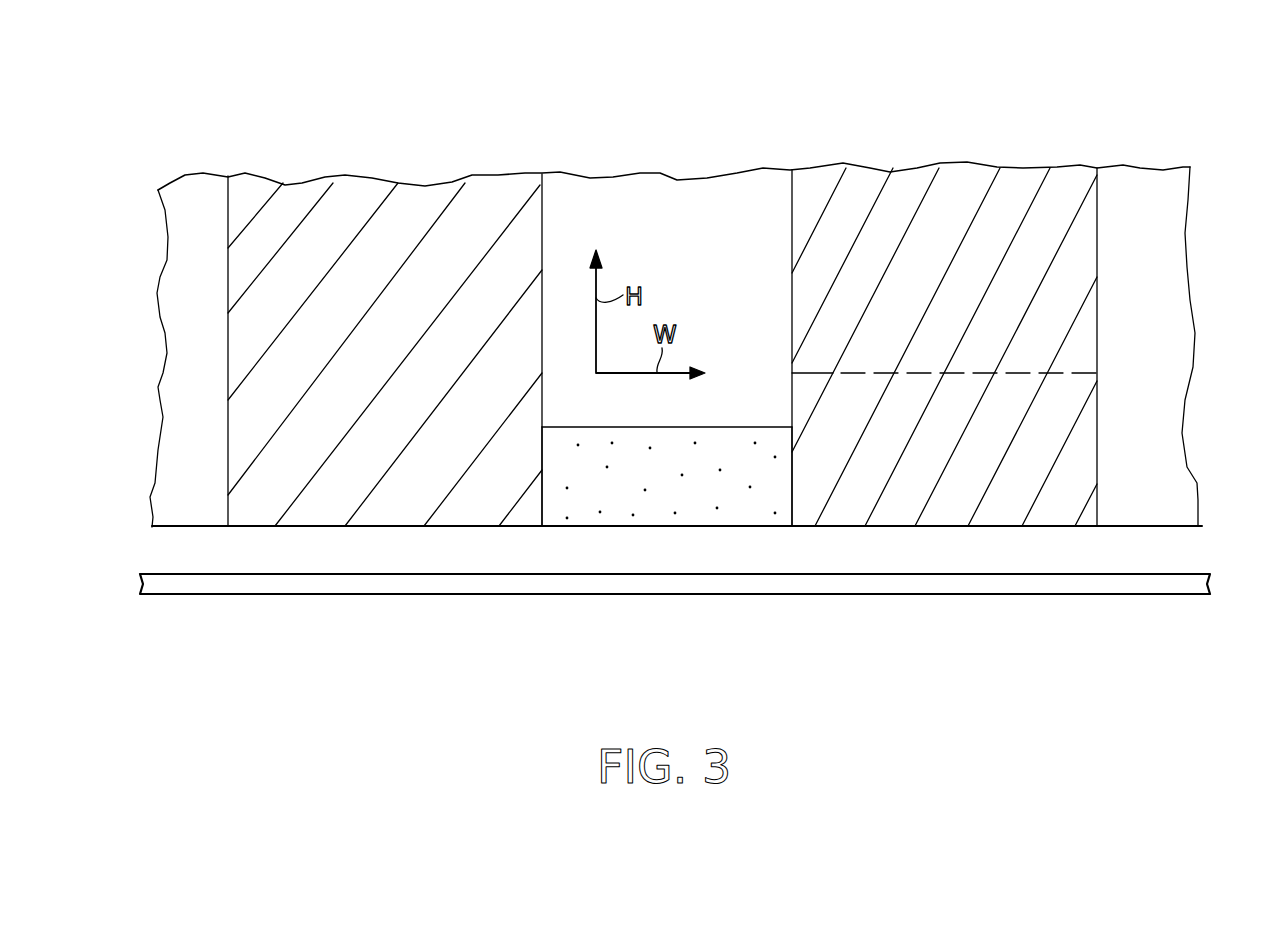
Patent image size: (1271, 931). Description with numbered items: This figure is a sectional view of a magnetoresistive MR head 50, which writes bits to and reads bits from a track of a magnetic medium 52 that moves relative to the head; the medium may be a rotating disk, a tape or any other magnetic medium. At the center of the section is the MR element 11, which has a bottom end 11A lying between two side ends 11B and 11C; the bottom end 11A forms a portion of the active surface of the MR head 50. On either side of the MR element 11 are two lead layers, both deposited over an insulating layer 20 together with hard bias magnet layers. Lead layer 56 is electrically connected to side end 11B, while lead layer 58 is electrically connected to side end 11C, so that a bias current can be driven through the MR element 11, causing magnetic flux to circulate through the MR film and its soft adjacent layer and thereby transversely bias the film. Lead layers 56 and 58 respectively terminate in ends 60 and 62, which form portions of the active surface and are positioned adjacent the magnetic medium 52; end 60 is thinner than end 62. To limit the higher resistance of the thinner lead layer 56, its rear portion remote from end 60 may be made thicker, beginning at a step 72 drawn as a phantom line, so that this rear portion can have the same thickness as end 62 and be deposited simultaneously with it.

The MR head 50 is at (1008, 108).
The insulating layer 20 is at (1160, 246).
The lead layer 58 is at (272, 383).
The lead layer 56 is at (1060, 416).
The step 72 is at (1027, 372).
The end of lead layer 58 62 is at (362, 527).
The end of lead layer 56 60 is at (943, 527).
The MR element 11 is at (740, 508).
The bottom end 11A is at (602, 528).
The side end 11B is at (793, 480).
The side end 11C is at (541, 450).
The magnetic medium 52 is at (918, 585).